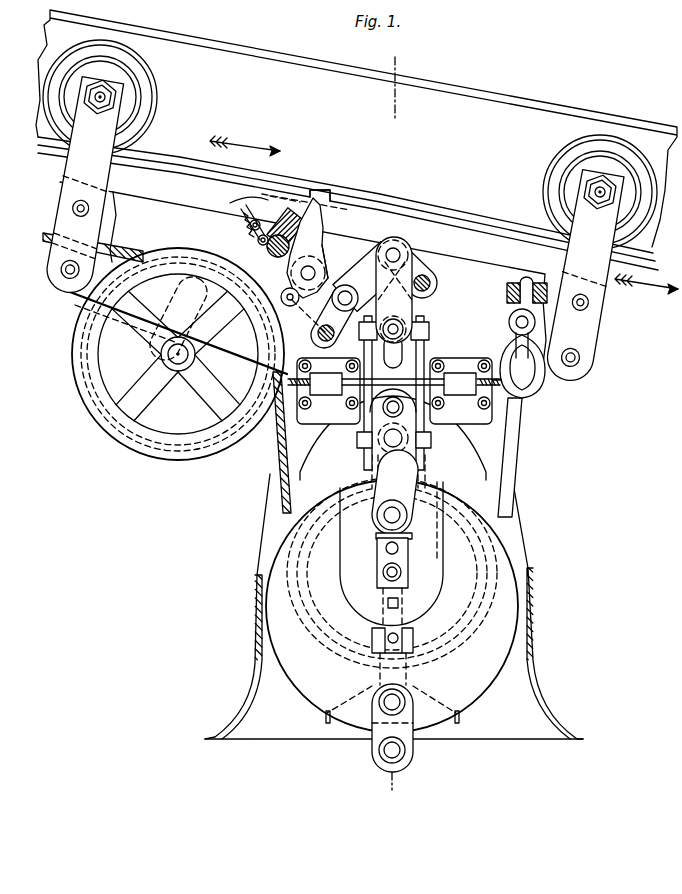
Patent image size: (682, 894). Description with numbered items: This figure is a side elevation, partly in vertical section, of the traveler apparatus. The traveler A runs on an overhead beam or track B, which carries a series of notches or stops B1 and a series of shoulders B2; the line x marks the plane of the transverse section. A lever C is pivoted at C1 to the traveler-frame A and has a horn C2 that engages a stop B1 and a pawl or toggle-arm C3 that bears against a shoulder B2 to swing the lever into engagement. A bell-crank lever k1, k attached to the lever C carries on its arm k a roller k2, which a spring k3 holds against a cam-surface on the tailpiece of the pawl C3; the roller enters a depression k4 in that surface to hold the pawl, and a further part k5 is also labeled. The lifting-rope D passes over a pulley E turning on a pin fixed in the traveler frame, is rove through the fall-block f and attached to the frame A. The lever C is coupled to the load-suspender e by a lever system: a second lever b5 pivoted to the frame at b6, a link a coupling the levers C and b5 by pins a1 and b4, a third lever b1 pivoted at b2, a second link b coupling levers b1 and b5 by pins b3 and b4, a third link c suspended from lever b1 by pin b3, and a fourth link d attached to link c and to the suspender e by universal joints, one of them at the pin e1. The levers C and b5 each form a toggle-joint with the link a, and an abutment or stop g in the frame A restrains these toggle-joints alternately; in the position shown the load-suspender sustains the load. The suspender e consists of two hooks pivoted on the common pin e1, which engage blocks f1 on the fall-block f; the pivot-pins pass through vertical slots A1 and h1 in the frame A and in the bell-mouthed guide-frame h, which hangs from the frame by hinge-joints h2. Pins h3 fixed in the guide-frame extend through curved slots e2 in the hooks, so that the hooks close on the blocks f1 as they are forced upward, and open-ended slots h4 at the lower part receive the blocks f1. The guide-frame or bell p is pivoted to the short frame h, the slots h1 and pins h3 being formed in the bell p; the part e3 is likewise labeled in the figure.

The overhead beam or track B is at (357, 152).
The notches or stops B1 is at (340, 190).
The shoulders B2 is at (288, 198).
The section line x x is at (389, 426).
The traveler A is at (303, 281).
The vertical slot in frame A A1 is at (403, 358).
The lever C is at (307, 248).
The pivot of lever C C1 is at (281, 290).
The projection or horn C2 is at (324, 227).
The pawl or toggle-arm C3 is at (252, 206).
The arm of bell-crank lever k is at (286, 228).
The arm of bell-crank lever k1 is at (254, 247).
The roller k2 is at (258, 244).
The spring k3 is at (278, 246).
The depression in cam-surface k4 is at (248, 222).
The spring k5 is at (238, 232).
The link a is at (341, 293).
The pin a1 is at (313, 270).
The second link b is at (369, 277).
The third lever b1 is at (430, 272).
The pivot of lever b1 b2 is at (431, 284).
The pin b3 is at (400, 255).
The pin b4 is at (309, 316).
The second lever b5 is at (334, 324).
The pivot of lever b5 b6 is at (318, 338).
The third link c is at (394, 290).
The fourth link d is at (418, 370).
The load-suspender e is at (391, 540).
The pivot-pin e1 is at (440, 462).
The curved slots e2 is at (380, 514).
The bar e3 is at (376, 536).
The fall-block f is at (392, 605).
The projections or blocks f1 is at (408, 580).
The abutment or stop g is at (285, 309).
The guide-frame h is at (305, 418).
The vertical slots h1 is at (440, 463).
The hinge-joints h2 is at (461, 391).
The pins h3 is at (428, 528).
The open-ended slots h4 is at (413, 640).
The guide-frame or bell p is at (394, 606).
The lifting-rope D is at (275, 436).
The pulley E is at (160, 462).